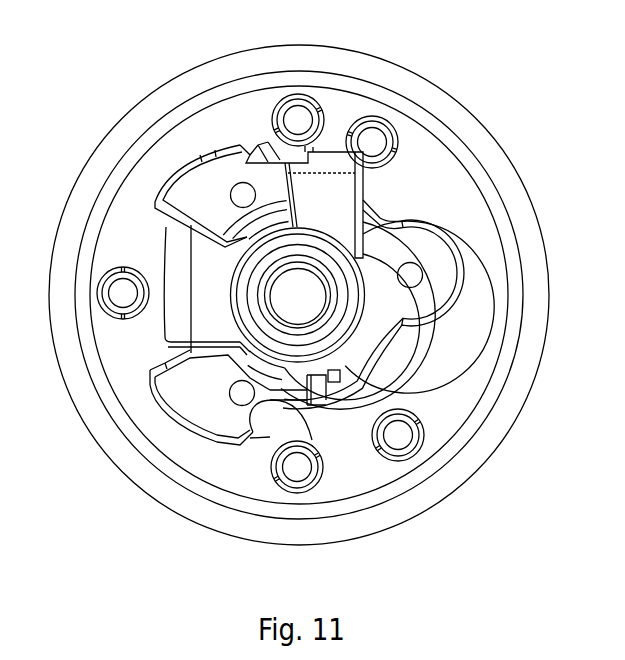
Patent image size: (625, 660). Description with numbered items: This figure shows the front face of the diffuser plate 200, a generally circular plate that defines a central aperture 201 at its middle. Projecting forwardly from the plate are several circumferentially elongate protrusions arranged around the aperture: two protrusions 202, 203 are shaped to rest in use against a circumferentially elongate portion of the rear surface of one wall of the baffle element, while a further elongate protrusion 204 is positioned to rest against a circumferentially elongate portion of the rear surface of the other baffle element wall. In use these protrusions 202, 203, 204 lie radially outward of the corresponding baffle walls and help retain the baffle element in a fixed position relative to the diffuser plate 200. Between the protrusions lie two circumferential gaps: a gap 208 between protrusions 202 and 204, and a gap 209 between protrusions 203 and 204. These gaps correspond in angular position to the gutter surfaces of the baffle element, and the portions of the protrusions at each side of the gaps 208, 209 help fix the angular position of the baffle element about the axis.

The diffuser plate 200 is at (112, 79).
The central aperture 201 is at (303, 302).
The circumferentially elongate protrusion 202 is at (383, 340).
The circumferentially elongate protrusion 203 is at (260, 378).
The elongate protrusion 204 is at (260, 213).
The circumferential gap 208 is at (332, 191).
The circumferential gap 209 is at (213, 315).